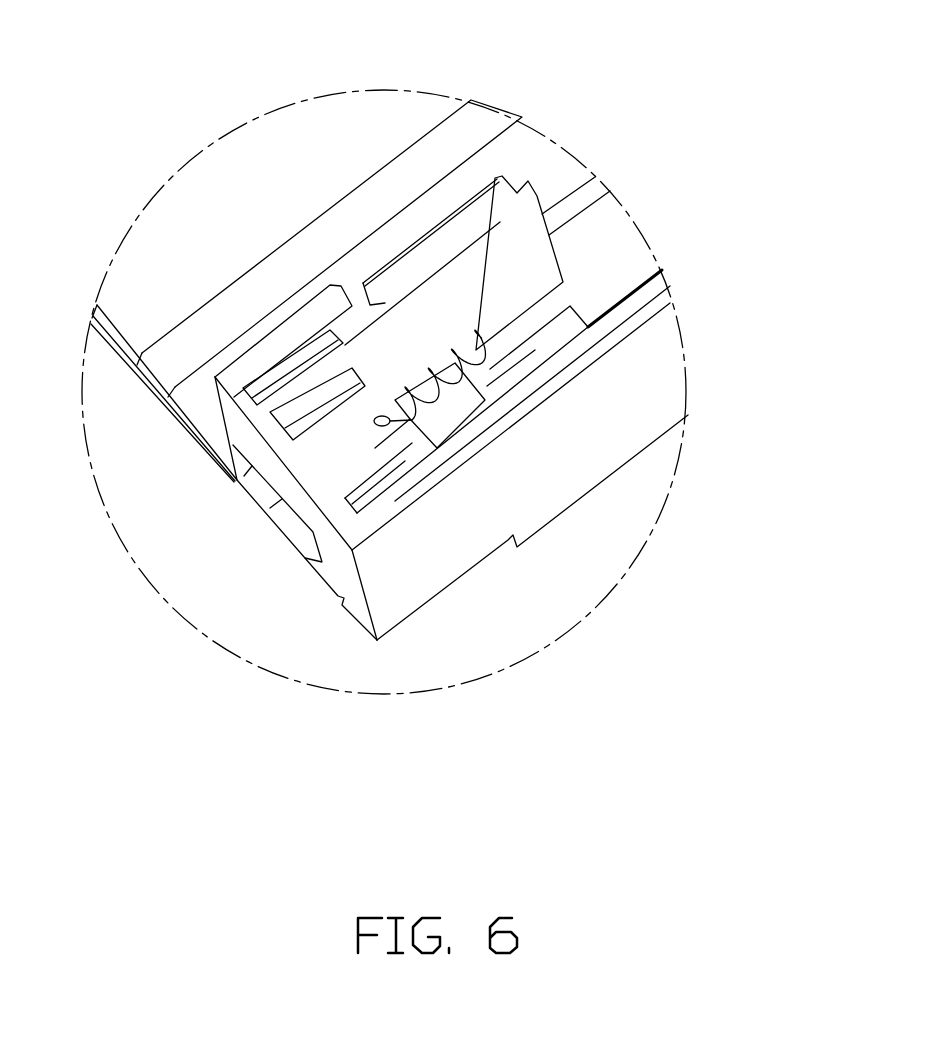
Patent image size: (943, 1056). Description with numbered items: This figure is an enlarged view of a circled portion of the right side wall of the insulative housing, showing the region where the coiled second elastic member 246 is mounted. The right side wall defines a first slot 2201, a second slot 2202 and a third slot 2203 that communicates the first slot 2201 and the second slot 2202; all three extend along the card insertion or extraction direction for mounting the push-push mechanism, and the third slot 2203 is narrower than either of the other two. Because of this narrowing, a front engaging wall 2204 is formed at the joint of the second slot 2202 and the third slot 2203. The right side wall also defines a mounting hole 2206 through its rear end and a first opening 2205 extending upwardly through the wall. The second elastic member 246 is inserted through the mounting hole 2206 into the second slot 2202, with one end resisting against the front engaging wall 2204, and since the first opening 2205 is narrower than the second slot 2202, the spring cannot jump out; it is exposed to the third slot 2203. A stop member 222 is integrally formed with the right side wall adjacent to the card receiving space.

The stop member 222 is at (494, 212).
The first slot 2201 is at (608, 233).
The second slot 2202 is at (432, 350).
The third slot 2203 is at (533, 315).
The front engaging wall 2204 is at (468, 335).
The first opening 2205 is at (357, 332).
The mounting hole 2206 is at (297, 520).
The second elastic member 246 is at (440, 338).